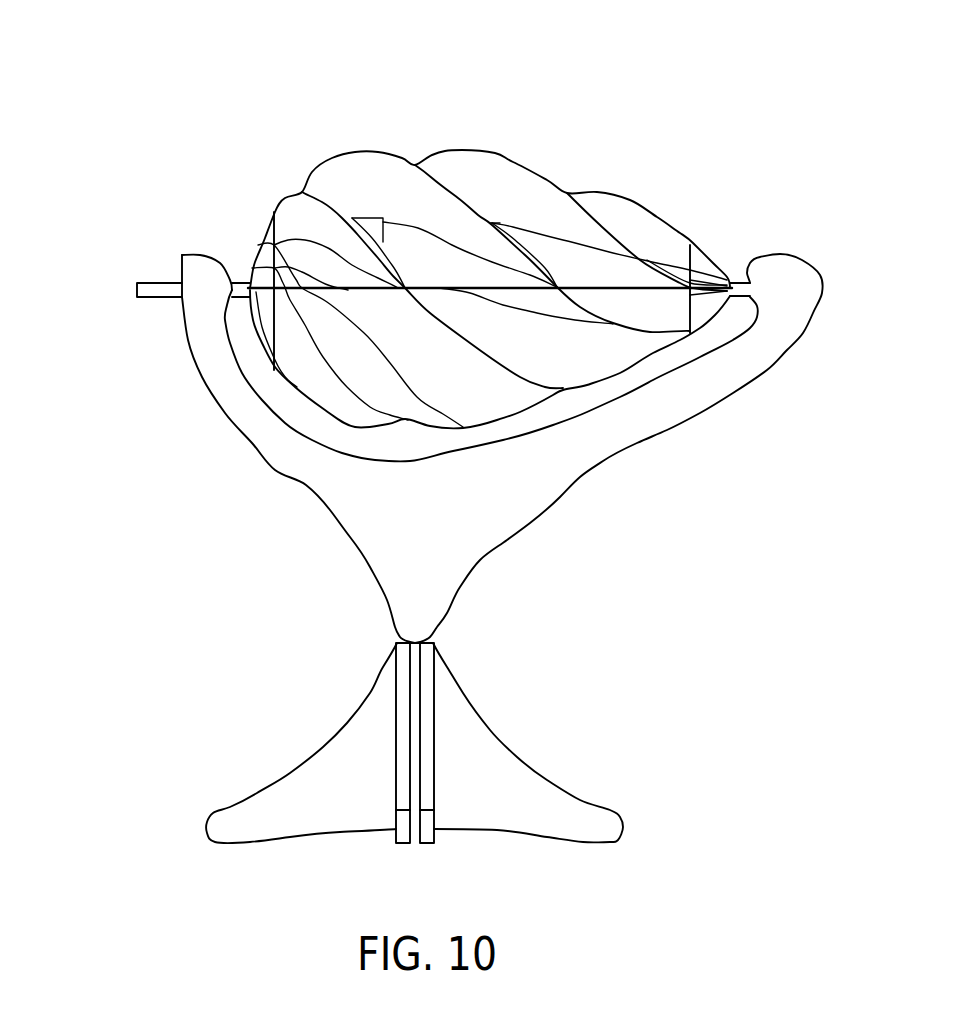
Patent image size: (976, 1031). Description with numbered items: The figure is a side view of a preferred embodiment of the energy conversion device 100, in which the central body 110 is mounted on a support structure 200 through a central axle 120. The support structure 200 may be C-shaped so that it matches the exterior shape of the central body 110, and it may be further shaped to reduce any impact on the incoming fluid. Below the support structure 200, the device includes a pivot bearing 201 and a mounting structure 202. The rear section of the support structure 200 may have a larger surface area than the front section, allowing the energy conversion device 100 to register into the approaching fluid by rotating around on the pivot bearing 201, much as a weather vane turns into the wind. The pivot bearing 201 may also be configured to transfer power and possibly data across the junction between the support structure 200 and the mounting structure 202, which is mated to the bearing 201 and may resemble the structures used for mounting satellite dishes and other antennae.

The energy conversion device 100 is at (430, 430).
The central body 110 is at (364, 136).
The central axle 120 is at (123, 283).
The support structure 200 is at (236, 445).
The pivot bearing 201 is at (382, 641).
The mounting structure 202 is at (296, 739).